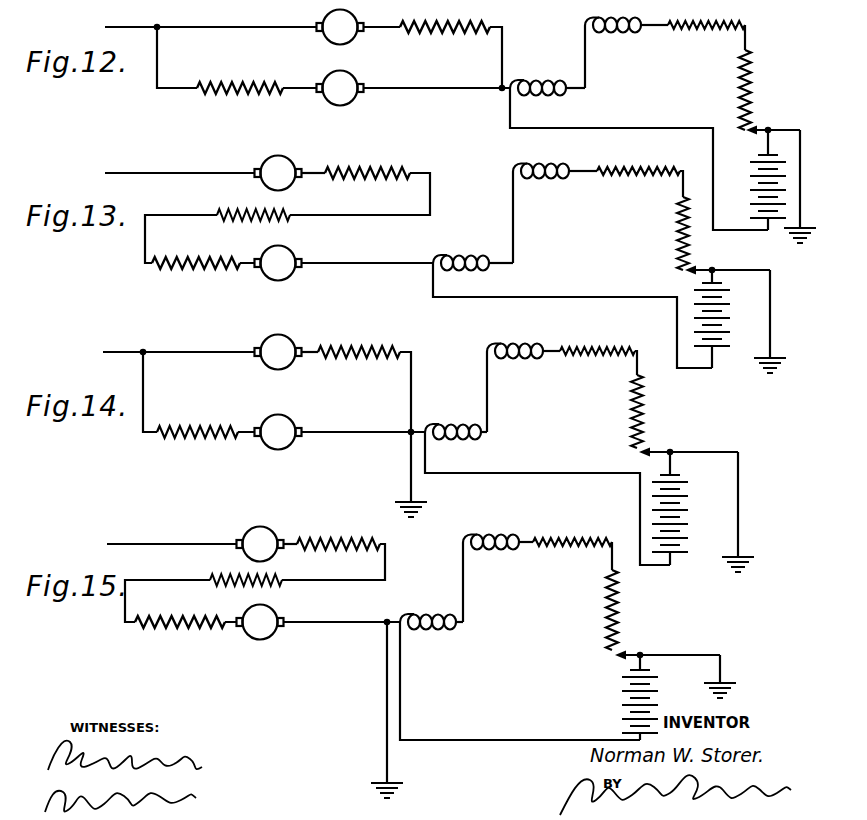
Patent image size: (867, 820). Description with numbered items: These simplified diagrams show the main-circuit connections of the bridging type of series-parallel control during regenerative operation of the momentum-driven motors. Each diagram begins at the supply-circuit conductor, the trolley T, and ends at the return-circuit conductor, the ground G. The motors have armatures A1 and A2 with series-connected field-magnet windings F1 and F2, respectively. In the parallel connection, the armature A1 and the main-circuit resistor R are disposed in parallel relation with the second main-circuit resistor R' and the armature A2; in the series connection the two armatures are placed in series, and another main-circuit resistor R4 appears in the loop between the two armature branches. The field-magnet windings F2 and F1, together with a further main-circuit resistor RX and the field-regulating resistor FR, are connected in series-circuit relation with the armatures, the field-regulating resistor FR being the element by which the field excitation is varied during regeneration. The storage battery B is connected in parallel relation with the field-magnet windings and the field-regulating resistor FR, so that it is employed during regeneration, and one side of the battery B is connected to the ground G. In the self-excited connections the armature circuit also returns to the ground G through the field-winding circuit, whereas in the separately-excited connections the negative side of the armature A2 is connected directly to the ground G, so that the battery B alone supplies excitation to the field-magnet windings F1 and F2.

In FIG. 12, the trolley conductor T is at (130, 16).
In FIG. 13, the trolley conductor T is at (137, 163).
In FIG. 14, the trolley conductor T is at (123, 342).
In FIG. 15, the trolley conductor T is at (137, 533).
In FIG. 12, the armature A1 is at (340, 27).
In FIG. 13, the armature A1 is at (278, 173).
In FIG. 14, the armature A1 is at (278, 352).
In FIG. 15, the armature A1 is at (260, 544).
In FIG. 12, the armature A2 is at (340, 88).
In FIG. 13, the armature A2 is at (278, 263).
In FIG. 14, the armature A2 is at (278, 432).
In FIG. 15, the armature A2 is at (260, 622).
In FIG. 12, the main-circuit resistor R is at (445, 38).
In FIG. 13, the main-circuit resistor R is at (367, 186).
In FIG. 14, the main-circuit resistor R is at (359, 368).
In FIG. 15, the main-circuit resistor R is at (338, 557).
In FIG. 12, the second main-circuit resistor R' is at (240, 99).
In FIG. 13, the second main-circuit resistor R' is at (196, 274).
In FIG. 14, the second main-circuit resistor R' is at (197, 442).
In FIG. 15, the second main-circuit resistor R' is at (180, 635).
In FIG. 13, the main-circuit resistor R4 is at (253, 227).
In FIG. 12, the field-magnet winding F1 is at (617, 40).
In FIG. 13, the field-magnet winding F1 is at (545, 183).
In FIG. 14, the field-magnet winding F1 is at (519, 368).
In FIG. 15, the field-magnet winding F1 is at (495, 555).
In FIG. 12, the field-magnet winding F2 is at (547, 97).
In FIG. 13, the field-magnet winding F2 is at (473, 273).
In FIG. 14, the field-magnet winding F2 is at (456, 441).
In FIG. 15, the field-magnet winding F2 is at (431, 633).
In FIG. 12, the main-circuit resistor RX is at (706, 41).
In FIG. 13, the main-circuit resistor RX is at (638, 184).
In FIG. 14, the main-circuit resistor RX is at (597, 369).
In FIG. 15, the main-circuit resistor RX is at (572, 556).
In FIG. 12, the field-regulating resistor FR is at (769, 92).
In FIG. 13, the field-regulating resistor FR is at (723, 236).
In FIG. 14, the field-regulating resistor FR is at (684, 416).
In FIG. 15, the field-regulating resistor FR is at (663, 615).
In FIG. 12, the storage battery B is at (759, 180).
In FIG. 13, the storage battery B is at (720, 319).
In FIG. 14, the storage battery B is at (677, 508).
In FIG. 15, the storage battery B is at (627, 697).
In FIG. 12, the ground conductor G is at (800, 194).
In FIG. 13, the ground conductor G is at (775, 329).
In FIG. 14, the ground conductor G is at (579, 527).
In FIG. 15, the ground conductor G is at (564, 716).